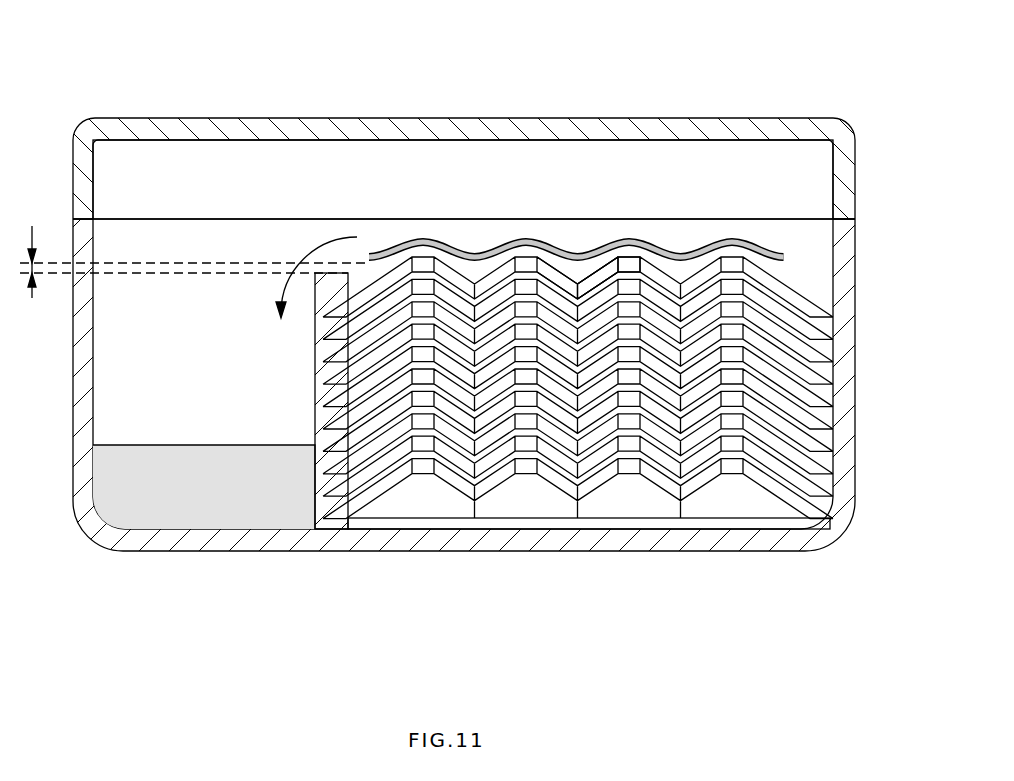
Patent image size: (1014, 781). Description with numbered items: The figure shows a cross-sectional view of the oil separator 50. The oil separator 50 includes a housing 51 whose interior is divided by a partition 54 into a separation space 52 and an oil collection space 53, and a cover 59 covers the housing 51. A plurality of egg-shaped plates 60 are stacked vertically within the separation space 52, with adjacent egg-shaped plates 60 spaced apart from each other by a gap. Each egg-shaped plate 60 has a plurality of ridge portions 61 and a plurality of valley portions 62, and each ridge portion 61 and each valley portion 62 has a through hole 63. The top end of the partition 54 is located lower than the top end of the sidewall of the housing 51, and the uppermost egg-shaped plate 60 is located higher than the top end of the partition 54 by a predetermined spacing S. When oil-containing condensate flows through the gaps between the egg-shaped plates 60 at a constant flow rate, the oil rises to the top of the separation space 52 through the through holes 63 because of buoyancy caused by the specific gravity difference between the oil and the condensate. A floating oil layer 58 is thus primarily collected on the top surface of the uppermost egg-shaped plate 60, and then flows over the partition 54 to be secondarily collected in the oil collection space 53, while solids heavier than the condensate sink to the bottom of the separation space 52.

The oil separator 50 is at (62, 48).
The housing 51 is at (495, 543).
The separation space 52 is at (779, 229).
The oil collection space 53 is at (224, 332).
The partition 54 is at (323, 283).
The floating oil layer 58 is at (470, 252).
The cover 59 is at (418, 130).
The egg-shaped plate 60 is at (790, 281).
The ridge portion 61 is at (602, 268).
The valley portion 62 is at (578, 283).
The through hole 63 is at (628, 262).
The predetermined spacing S is at (188, 261).